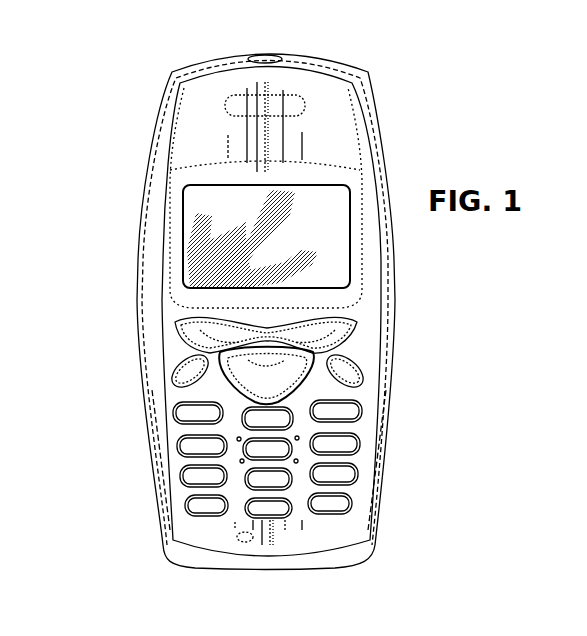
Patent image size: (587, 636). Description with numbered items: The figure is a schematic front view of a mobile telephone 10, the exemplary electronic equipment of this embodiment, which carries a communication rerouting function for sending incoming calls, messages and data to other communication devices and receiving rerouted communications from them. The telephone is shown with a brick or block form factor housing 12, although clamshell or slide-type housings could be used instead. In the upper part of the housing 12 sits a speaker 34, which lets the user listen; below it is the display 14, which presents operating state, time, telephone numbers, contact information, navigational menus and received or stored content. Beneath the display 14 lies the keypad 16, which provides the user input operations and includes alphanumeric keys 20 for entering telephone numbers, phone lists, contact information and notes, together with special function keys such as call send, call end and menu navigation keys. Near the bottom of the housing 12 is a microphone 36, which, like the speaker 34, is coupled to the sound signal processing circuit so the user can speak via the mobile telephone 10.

The mobile telephone 10 is at (121, 67).
The housing 12 is at (157, 135).
The display 14 is at (193, 211).
The keypad 16 is at (173, 464).
The alphanumeric keys 20 is at (237, 368).
The speaker 34 is at (246, 108).
The microphone 36 is at (250, 541).